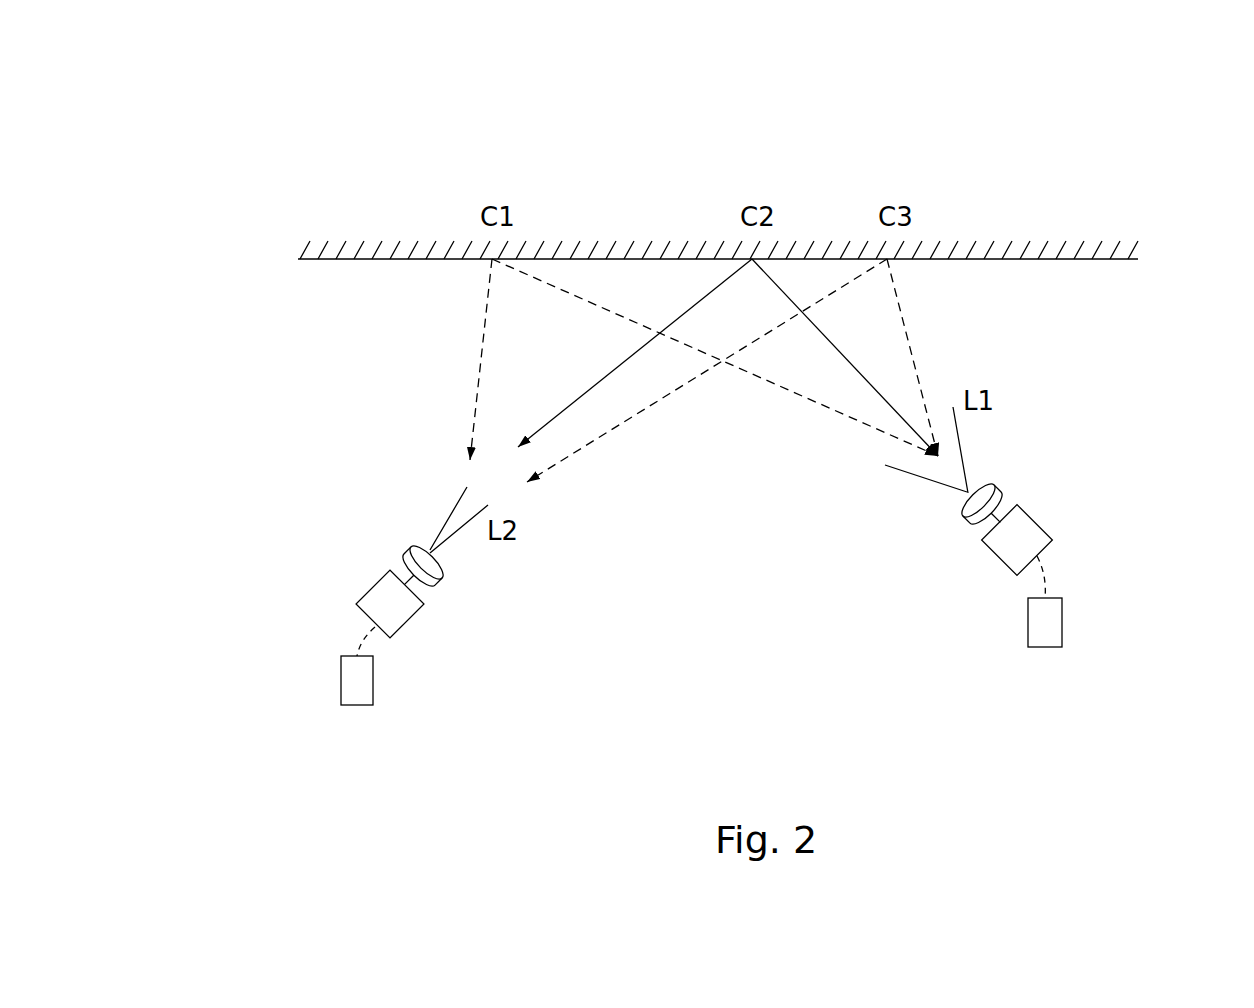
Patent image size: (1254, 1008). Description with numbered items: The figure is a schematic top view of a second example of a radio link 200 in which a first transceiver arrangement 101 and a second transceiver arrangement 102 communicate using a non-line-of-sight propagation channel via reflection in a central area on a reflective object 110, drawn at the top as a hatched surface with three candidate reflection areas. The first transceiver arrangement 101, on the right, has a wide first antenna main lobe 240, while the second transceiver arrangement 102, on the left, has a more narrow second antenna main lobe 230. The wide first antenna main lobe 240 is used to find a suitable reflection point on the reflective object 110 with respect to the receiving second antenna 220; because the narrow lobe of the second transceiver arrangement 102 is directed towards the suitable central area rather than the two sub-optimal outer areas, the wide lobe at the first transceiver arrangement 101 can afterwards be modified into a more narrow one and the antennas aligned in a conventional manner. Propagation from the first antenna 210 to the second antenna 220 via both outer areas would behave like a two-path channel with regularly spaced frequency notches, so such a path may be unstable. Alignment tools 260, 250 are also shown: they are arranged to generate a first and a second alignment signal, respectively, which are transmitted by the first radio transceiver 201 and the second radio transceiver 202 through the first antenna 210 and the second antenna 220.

The radio link 200 is at (1137, 121).
The reflective object 110 is at (318, 268).
The second transceiver arrangement 102 is at (308, 596).
The second radio transceiver 202 is at (360, 565).
The second antenna 220 is at (455, 570).
The antenna main lobe L2 230 is at (437, 515).
The alignment tool 250 is at (357, 706).
The first transceiver arrangement 101 is at (933, 616).
The first radio transceiver 201 is at (1047, 507).
The first antenna 210 is at (960, 527).
The antenna main lobe L1 240 is at (967, 448).
The alignment tool 260 is at (1078, 628).